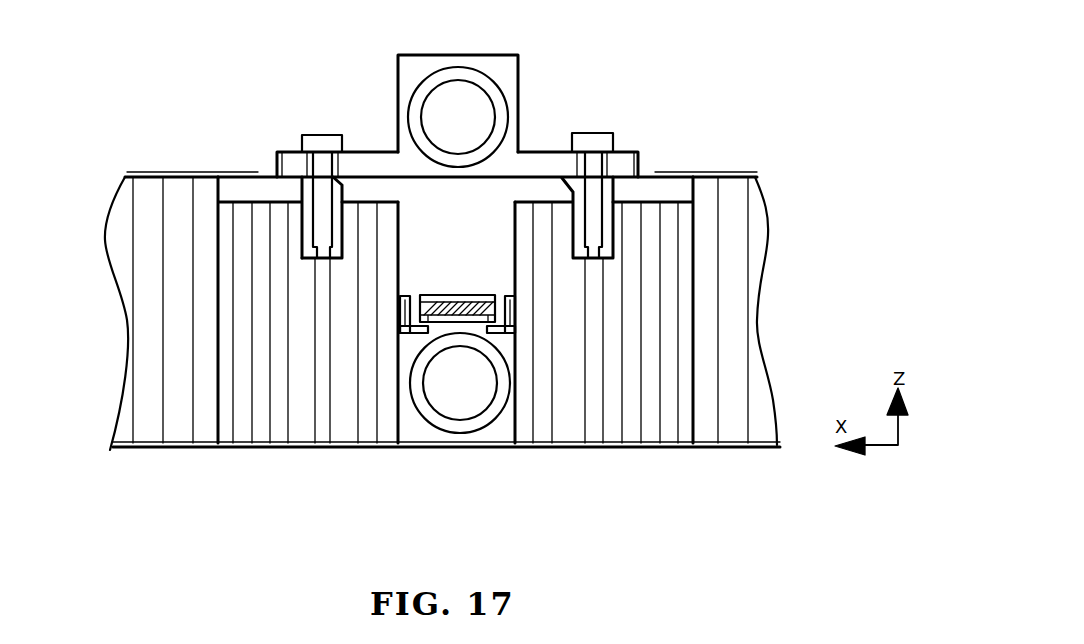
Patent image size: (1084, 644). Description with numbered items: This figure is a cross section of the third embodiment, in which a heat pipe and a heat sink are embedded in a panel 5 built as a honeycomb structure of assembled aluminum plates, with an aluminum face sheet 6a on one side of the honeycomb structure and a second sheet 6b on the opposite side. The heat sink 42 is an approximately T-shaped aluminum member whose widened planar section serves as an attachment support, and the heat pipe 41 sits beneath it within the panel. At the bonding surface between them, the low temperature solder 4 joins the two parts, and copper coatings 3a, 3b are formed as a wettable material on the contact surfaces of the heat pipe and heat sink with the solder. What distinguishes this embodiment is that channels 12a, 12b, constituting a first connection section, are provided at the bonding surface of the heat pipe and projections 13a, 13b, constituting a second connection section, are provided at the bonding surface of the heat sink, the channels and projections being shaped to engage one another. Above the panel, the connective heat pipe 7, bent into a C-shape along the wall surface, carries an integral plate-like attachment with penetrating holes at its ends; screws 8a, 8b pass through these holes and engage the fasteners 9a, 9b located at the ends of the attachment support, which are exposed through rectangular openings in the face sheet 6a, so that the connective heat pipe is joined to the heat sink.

The copper coating 3a is at (402, 360).
The copper coating 3b is at (440, 296).
The low temperature solder 4 is at (475, 368).
The heat pipe 41 is at (492, 427).
The heat sink 42 is at (505, 183).
The panel 5 is at (728, 280).
The face sheet 6a is at (173, 175).
The base plate 6b is at (210, 443).
The connective heat pipe 7 is at (500, 70).
The screw 8a is at (312, 133).
The screw 8b is at (600, 150).
The fastener 9a is at (302, 195).
The fastener 9b is at (607, 200).
The channel 12a is at (410, 350).
The channel 12b is at (503, 337).
The projection 13a is at (400, 313).
The projection 13b is at (512, 310).